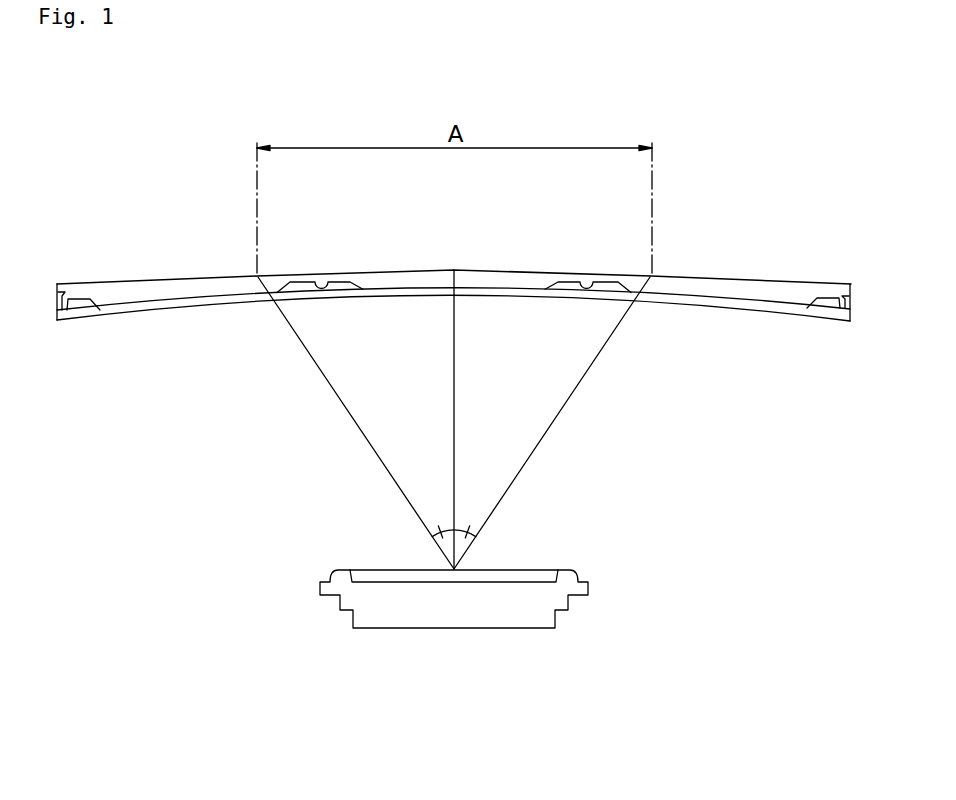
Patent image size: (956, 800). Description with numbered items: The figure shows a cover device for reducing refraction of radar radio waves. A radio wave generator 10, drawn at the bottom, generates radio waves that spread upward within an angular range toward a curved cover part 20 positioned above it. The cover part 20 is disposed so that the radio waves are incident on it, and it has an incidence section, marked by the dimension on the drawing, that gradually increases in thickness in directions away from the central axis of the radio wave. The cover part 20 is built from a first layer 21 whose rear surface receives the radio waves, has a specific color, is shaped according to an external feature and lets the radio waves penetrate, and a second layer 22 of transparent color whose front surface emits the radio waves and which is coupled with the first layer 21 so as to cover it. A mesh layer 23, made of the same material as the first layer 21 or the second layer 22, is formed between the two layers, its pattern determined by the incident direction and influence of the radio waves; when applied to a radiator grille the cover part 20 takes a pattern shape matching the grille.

The radio wave generator 10 is at (453, 630).
The cover part 20 is at (789, 279).
The first layer 21 is at (790, 320).
The second layer 22 is at (707, 288).
The mesh layer 23 is at (338, 283).